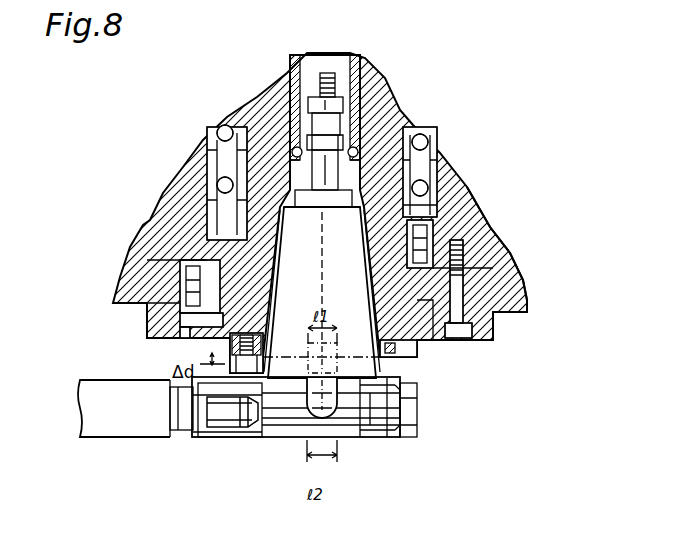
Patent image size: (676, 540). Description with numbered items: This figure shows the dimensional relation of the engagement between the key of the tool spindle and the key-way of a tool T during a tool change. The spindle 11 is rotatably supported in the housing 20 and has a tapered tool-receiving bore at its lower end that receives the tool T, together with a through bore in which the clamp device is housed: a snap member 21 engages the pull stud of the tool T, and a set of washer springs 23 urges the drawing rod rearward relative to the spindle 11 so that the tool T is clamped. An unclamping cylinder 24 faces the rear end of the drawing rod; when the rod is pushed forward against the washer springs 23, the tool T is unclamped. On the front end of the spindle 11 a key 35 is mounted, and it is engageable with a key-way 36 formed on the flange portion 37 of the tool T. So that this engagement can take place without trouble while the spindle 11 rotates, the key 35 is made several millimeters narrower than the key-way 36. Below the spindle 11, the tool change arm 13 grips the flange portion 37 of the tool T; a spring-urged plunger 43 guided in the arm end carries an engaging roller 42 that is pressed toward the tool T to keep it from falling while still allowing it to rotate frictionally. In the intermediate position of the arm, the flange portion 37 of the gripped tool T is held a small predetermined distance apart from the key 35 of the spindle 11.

The spindle 11 is at (263, 165).
The housing 20 is at (490, 228).
The snap member 21 is at (283, 258).
The washer springs 23 is at (330, 183).
The unclamping cylinder 24 is at (303, 130).
The key 35 is at (230, 357).
The key-way 36 is at (307, 410).
The flange portion 37 is at (392, 392).
The tool change arm 13 is at (112, 427).
The engaging roller 42 is at (247, 412).
The plunger 43 is at (182, 420).
The tool T is at (377, 449).